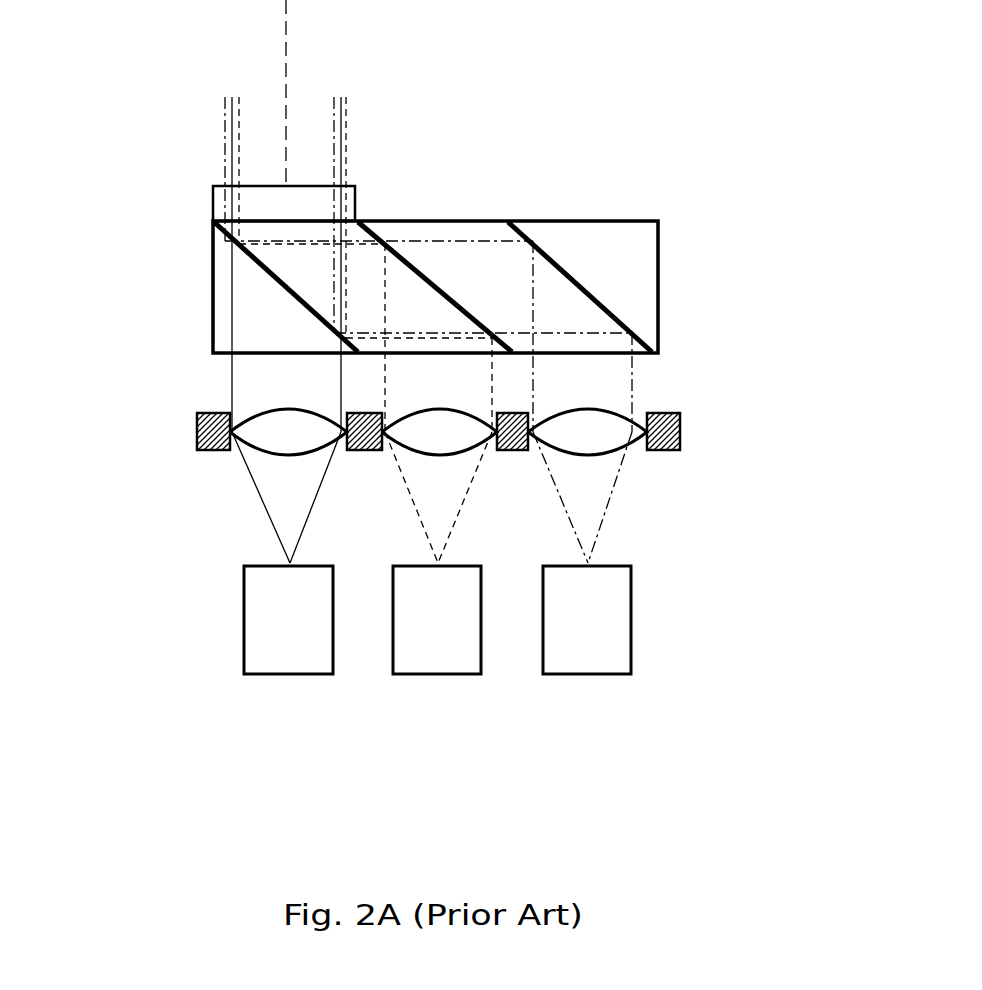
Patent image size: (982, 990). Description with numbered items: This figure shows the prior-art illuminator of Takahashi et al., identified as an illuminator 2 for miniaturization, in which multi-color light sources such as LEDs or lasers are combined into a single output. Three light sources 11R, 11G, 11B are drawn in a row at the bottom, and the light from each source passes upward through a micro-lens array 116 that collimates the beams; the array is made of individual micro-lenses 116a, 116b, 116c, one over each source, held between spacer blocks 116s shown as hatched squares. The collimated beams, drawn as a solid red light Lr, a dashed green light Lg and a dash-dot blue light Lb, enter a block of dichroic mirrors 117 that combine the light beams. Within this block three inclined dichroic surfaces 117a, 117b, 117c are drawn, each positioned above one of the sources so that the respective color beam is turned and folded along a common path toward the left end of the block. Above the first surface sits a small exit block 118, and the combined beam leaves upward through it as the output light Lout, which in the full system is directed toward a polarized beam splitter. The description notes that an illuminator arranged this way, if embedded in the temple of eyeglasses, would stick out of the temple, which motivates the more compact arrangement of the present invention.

The optical axis / light source device 2 is at (318, 2).
The output light Lout is at (363, 128).
The exit prism block 118 is at (216, 202).
The dichroic mirrors 117 is at (444, 299).
The first dichroic surface 117a is at (281, 284).
The second dichroic surface 117b is at (437, 283).
The third dichroic surface 117c is at (572, 278).
The micro-lenses 116 is at (443, 448).
The lens spacers 116s is at (197, 430).
The first collimating lens 116a is at (281, 442).
The second collimating lens 116b is at (441, 411).
The third collimating lens 116c is at (594, 442).
The red light Lr is at (258, 505).
The green light Lg is at (472, 497).
The blue light Lb is at (605, 518).
The red light source 11R is at (288, 642).
The green light source 11G is at (436, 642).
The blue light source 11B is at (587, 642).